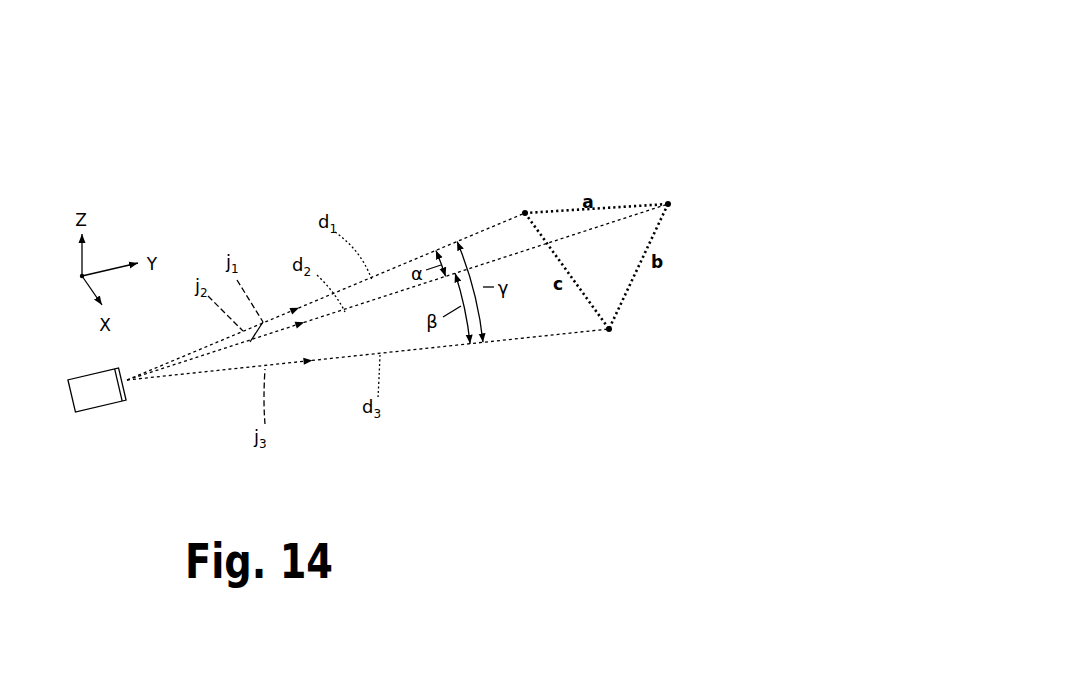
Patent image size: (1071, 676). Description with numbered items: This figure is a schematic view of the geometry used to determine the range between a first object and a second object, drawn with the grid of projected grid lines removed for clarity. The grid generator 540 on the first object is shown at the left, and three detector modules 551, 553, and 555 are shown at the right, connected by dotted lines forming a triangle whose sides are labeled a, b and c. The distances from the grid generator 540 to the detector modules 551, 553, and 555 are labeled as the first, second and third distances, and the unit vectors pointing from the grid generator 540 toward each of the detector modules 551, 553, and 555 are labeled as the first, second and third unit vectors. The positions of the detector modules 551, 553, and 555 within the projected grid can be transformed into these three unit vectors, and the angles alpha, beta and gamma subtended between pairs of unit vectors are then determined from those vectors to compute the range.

The grid generator 540 is at (101, 414).
The detector module 551 is at (525, 213).
The detector module 553 is at (668, 204).
The detector module 555 is at (609, 329).